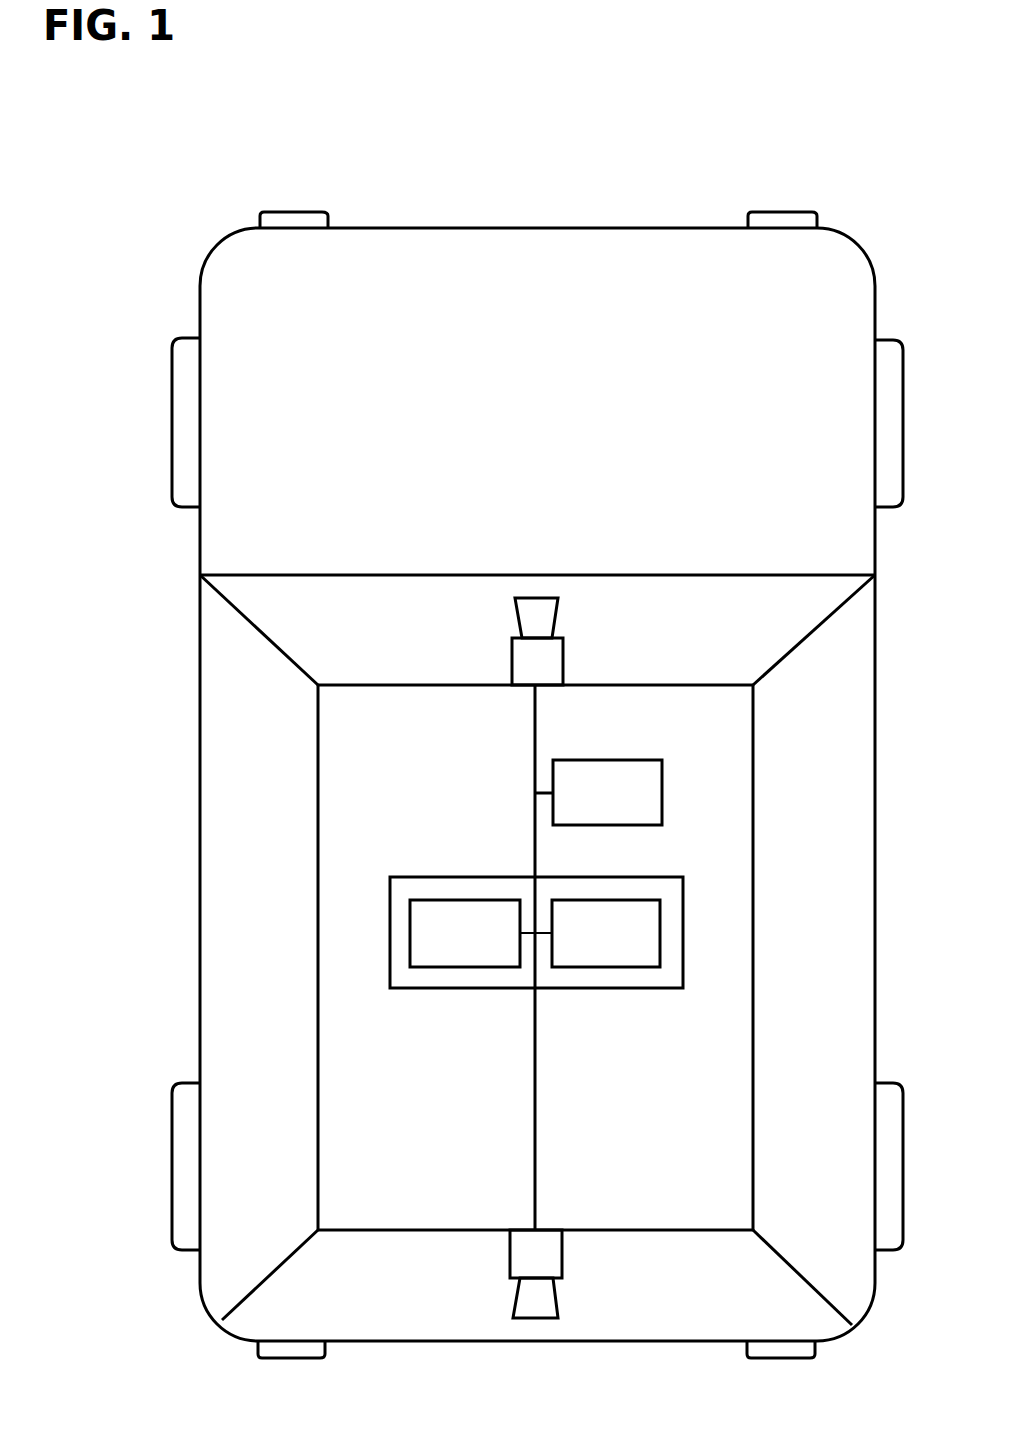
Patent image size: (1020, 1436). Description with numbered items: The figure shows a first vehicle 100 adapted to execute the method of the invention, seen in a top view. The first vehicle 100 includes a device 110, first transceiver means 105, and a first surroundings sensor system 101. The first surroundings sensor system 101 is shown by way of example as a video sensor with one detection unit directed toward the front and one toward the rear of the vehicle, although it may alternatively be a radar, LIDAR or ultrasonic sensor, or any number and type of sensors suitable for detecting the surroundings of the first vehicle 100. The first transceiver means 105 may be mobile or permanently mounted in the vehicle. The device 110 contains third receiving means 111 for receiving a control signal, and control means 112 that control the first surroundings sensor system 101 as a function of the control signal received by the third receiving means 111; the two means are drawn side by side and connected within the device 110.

The first vehicle 100 is at (546, 228).
The first surroundings sensor system 101 is at (558, 612).
The first transceiver means 105 is at (662, 793).
The device 110 is at (683, 930).
The third receiving means 111 is at (467, 967).
The control means 112 is at (600, 967).